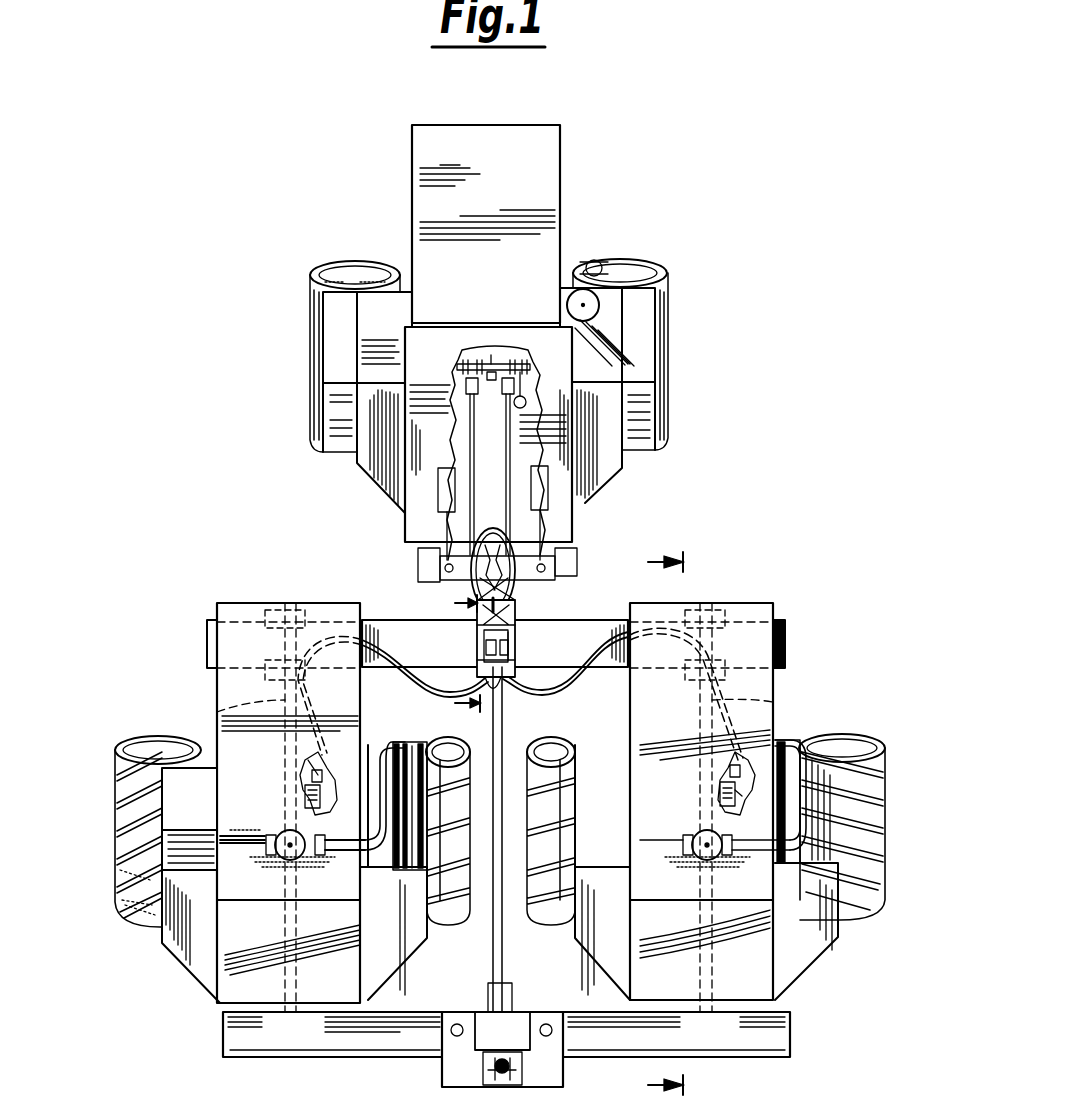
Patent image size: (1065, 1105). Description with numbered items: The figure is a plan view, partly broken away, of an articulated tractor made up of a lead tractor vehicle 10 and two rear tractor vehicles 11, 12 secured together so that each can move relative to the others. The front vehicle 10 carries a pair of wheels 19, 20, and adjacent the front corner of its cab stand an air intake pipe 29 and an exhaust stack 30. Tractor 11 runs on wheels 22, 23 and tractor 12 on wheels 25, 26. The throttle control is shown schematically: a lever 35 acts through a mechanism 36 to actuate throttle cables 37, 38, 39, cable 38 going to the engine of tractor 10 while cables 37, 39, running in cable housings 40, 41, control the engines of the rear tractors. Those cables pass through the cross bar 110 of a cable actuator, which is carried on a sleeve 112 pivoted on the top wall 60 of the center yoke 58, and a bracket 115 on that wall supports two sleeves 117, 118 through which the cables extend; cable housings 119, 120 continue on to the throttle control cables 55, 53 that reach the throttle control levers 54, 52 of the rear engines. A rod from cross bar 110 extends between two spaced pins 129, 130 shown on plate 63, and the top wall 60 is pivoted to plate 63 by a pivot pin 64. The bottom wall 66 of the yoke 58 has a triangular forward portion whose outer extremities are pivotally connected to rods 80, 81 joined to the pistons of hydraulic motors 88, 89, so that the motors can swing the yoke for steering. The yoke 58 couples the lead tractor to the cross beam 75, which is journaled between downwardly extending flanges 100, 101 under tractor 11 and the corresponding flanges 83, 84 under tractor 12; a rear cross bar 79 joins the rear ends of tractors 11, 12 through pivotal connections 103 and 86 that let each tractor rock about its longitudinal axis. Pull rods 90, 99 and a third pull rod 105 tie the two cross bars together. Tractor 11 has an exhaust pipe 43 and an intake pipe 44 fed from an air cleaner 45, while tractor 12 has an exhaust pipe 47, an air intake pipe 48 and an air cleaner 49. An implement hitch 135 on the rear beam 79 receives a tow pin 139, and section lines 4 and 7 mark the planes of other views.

The first tractor vehicle 10 is at (582, 190).
The wheel 19 is at (318, 262).
The wheel 20 is at (665, 262).
The air intake pipe 29 is at (595, 262).
The exhaust stack 30 is at (598, 282).
The mechanism 36 is at (507, 342).
The throttle cable 37 is at (466, 370).
The throttle cable 38 is at (490, 352).
The throttle cable 39 is at (514, 372).
The lever 35 is at (526, 391).
The cable housing 40 is at (468, 400).
The cable housing 41 is at (512, 445).
The hydraulic motor 88 is at (548, 486).
The hydraulic motor 89 is at (440, 490).
The rod 80 is at (545, 522).
The rod 81 is at (442, 526).
The pin 129 is at (420, 565).
The plate 63 is at (562, 556).
The bottom wall 66 is at (556, 575).
The pivot pin 64 is at (493, 566).
The pin 130 is at (528, 584).
The top wall 60 is at (520, 603).
The center yoke 58 is at (465, 613).
The beam 75 is at (413, 592).
The cable housing 120 is at (345, 619).
The cable housing 119 is at (640, 618).
The cross bar 110 is at (485, 628).
The sleeve 112 is at (510, 640).
The sleeve 117 is at (485, 656).
The sleeve 118 is at (512, 656).
The bracket 115 is at (470, 673).
The section line 7- 7 is at (461, 649).
The section line 4- 4 is at (673, 823).
The third pull rod 105 is at (504, 732).
The second tractor vehicle 11 is at (208, 582).
The third tractor vehicle 12 is at (786, 582).
The wheel 22 is at (122, 860).
The wheel 26 is at (855, 735).
The wheel 23 is at (437, 928).
The wheel 25 is at (556, 928).
The flange 100 is at (270, 605).
The flange 101 is at (265, 672).
The pull rod 99 is at (217, 708).
The pivotal connection 103 is at (283, 1042).
The right guide rod 83 is at (718, 605).
The right lower guide 84 is at (725, 670).
The pull rod 90 is at (773, 702).
The right lower bracket 86 is at (735, 1026).
The throttle control lever 52 is at (327, 778).
The cable 53 is at (305, 773).
The throttle control cable 55 is at (728, 780).
The throttle control lever 54 is at (720, 795).
The air cleaner 45 is at (308, 862).
The exhaust pipe 43 is at (376, 742).
The intake pipe 44 is at (420, 745).
The air cleaner 49 is at (726, 860).
The air intake pipe 48 is at (810, 820).
The exhaust pipe 47 is at (790, 745).
The second cross bar 79 is at (705, 1058).
The implement hitch 135 is at (437, 1076).
The tow pin 139 is at (505, 1078).